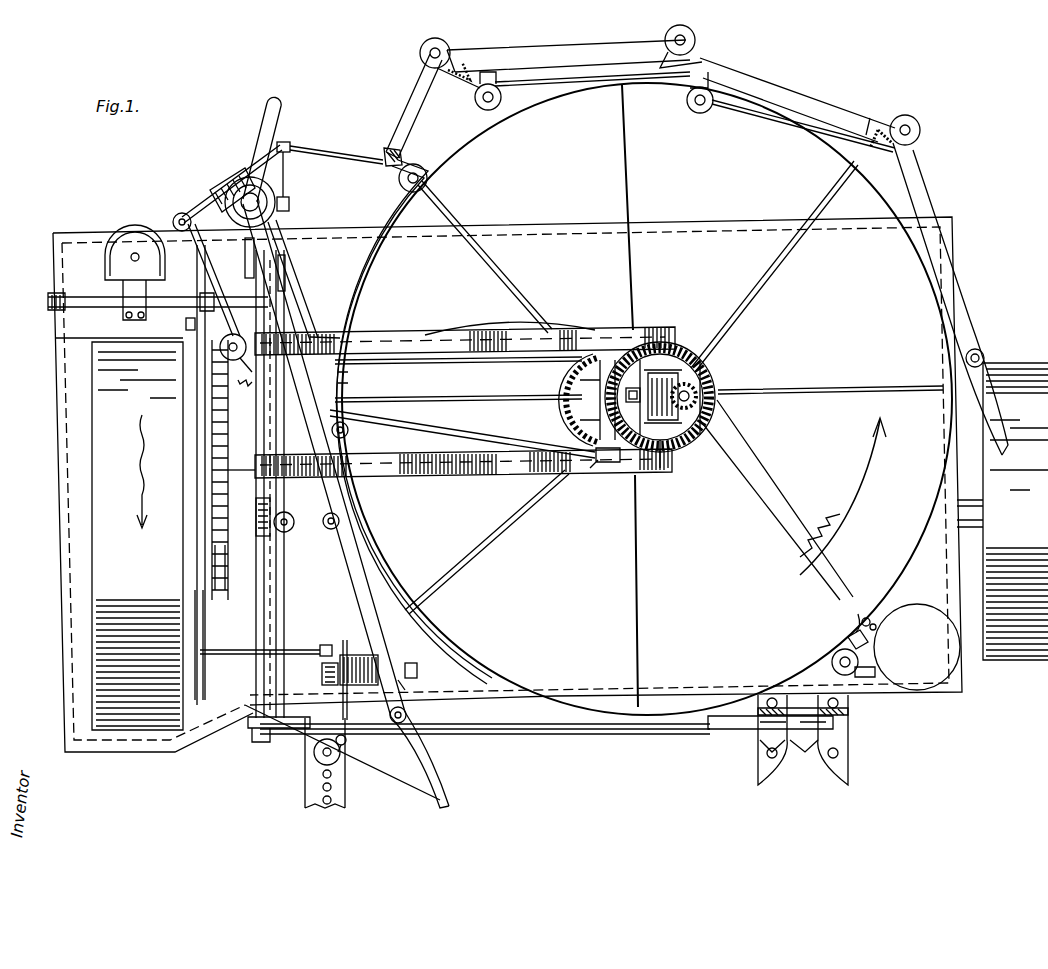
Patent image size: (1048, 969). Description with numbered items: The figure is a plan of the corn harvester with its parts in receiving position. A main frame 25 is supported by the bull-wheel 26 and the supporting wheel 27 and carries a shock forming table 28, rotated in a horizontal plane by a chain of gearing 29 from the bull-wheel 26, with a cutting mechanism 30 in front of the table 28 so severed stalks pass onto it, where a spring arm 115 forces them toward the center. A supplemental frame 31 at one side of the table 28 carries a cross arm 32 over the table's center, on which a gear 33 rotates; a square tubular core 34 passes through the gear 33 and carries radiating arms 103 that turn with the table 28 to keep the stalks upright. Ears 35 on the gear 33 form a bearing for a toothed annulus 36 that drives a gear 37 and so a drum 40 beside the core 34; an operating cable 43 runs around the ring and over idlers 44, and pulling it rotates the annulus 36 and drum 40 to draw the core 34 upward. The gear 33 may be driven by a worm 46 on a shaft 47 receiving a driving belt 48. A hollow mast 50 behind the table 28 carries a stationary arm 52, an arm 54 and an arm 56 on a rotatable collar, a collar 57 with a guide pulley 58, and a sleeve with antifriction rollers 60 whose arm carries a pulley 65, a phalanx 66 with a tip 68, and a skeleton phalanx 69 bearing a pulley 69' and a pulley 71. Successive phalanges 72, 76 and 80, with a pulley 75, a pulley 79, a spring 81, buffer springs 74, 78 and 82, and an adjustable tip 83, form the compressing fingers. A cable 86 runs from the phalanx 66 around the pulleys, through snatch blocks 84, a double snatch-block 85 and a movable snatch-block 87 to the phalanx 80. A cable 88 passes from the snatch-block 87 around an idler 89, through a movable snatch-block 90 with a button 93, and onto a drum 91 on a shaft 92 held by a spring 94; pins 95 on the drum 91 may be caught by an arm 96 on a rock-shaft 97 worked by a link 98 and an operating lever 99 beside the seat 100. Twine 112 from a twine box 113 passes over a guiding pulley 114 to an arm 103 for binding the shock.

The main frame 25 is at (473, 724).
The bull-wheel 26 is at (137, 536).
The supporting wheel 27 is at (1004, 380).
The shock forming table 28 is at (605, 698).
The chain of gearing 29 is at (212, 428).
The cutting mechanism 30 is at (762, 745).
The supplemental frame 31 is at (330, 333).
The cross arm 32 is at (450, 332).
The gear 33 is at (582, 378).
The core 34 is at (640, 345).
The ears 35 is at (680, 376).
The annulus 36 is at (698, 394).
The gear 37 is at (668, 448).
The drum 40 is at (662, 375).
The operating cable 43 is at (462, 362).
The idlers 44 is at (244, 384).
The worm 46 is at (610, 468).
The shaft 47 is at (486, 437).
The driving belt 48 is at (340, 378).
The hollow mast 50 is at (265, 198).
The arm 52 is at (290, 205).
The arm 54 is at (272, 102).
The arm 56 is at (272, 205).
The collar 57 is at (245, 178).
The guide pulley 58 is at (248, 238).
The antifriction rollers 60 is at (212, 186).
The pulley 65 is at (357, 436).
The phalanx 66 is at (362, 612).
The tip 68 is at (445, 780).
The phalanx 69 is at (414, 106).
The pulley 69' is at (428, 178).
The pulley 71 is at (384, 152).
The second phalanx 72 is at (545, 62).
The buffer spring 74 is at (466, 72).
The pulley 75 is at (500, 105).
The third phalanx 76 is at (818, 112).
The buffer-spring 78 is at (694, 52).
The pulley 79 is at (706, 110).
The fourth phalanx 80 is at (925, 205).
The spring 81 is at (270, 515).
The buffer-spring 82 is at (912, 150).
The tip 83 is at (996, 455).
The snatch blocks 84 is at (290, 146).
The double snatch-block 85 is at (176, 213).
The rope or cable 86 is at (806, 150).
The movable snatch-block 87 is at (225, 355).
The cable 88 is at (340, 616).
The idler 89 is at (306, 517).
The movable snatch-block 90 is at (314, 760).
The drum 91 is at (348, 658).
The shaft 92 is at (417, 667).
The button 93 is at (346, 742).
The spring 94 is at (405, 684).
The pins 95 is at (322, 670).
The arm 96 is at (327, 646).
The rock-shaft 97 is at (238, 650).
The link 98 is at (200, 608).
The operating lever 99 is at (186, 322).
The seat 100 is at (134, 240).
The radiating arms 103 is at (626, 308).
The twine 112 is at (800, 480).
The twine box 113 is at (917, 647).
The guiding pulley 114 is at (878, 627).
The spring arm 115 is at (490, 326).